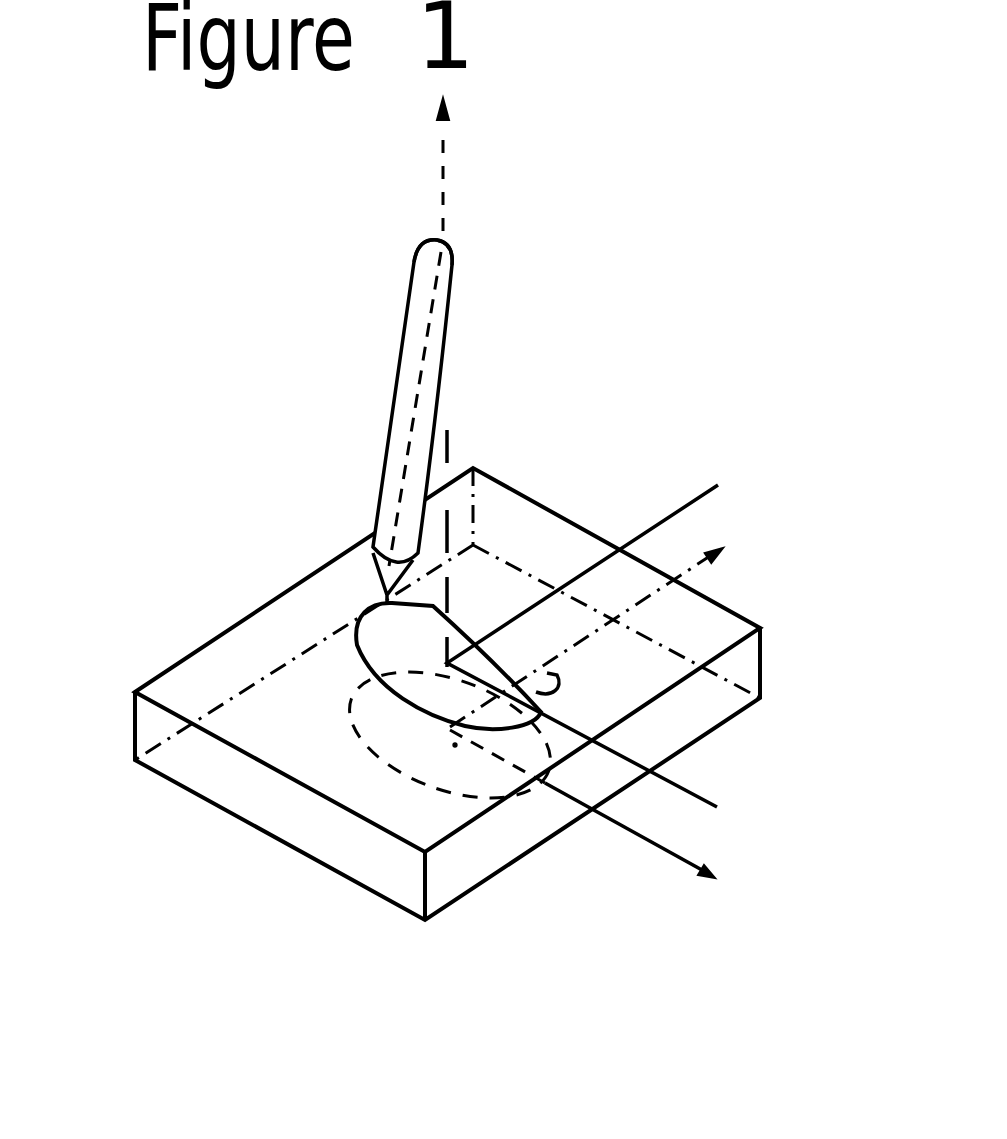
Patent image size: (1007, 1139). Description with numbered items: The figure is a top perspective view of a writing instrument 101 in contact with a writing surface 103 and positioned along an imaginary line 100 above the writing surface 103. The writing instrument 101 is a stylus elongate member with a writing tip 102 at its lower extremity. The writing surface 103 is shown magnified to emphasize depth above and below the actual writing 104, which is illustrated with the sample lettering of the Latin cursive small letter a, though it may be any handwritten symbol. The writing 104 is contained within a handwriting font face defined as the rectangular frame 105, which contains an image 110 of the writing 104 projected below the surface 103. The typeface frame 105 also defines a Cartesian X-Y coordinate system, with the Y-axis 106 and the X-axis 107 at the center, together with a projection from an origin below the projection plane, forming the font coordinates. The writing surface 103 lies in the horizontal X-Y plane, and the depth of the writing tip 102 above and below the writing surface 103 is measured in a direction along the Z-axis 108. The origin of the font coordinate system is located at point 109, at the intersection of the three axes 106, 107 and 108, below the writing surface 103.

The imaginary line 100 is at (425, 307).
The writing instrument 101 is at (392, 400).
The writing tip 102 is at (378, 598).
The writing surface 103 is at (270, 768).
The writing 104 is at (413, 710).
The rectangular frame 105 is at (423, 924).
The Y-axis 106 is at (673, 867).
The X-axis 107 is at (723, 562).
The Z-axis 108 is at (460, 113).
The point 109 is at (455, 750).
The image 110 is at (437, 787).